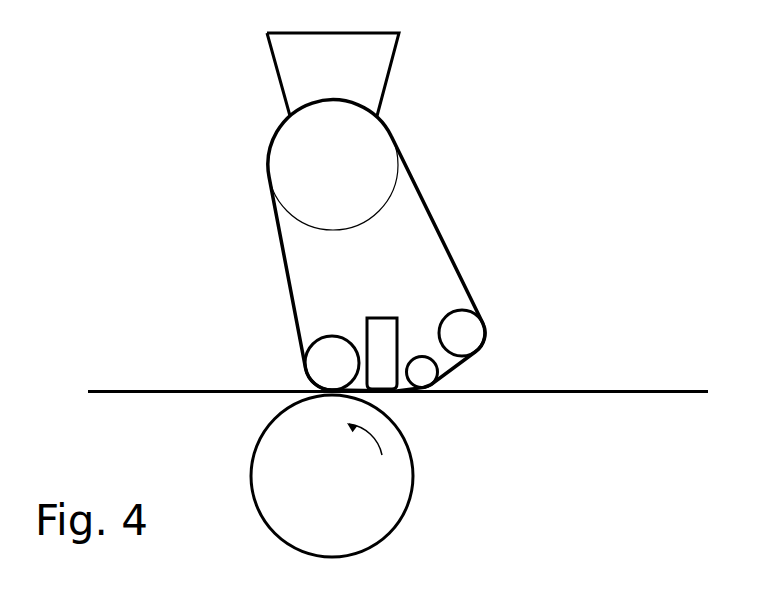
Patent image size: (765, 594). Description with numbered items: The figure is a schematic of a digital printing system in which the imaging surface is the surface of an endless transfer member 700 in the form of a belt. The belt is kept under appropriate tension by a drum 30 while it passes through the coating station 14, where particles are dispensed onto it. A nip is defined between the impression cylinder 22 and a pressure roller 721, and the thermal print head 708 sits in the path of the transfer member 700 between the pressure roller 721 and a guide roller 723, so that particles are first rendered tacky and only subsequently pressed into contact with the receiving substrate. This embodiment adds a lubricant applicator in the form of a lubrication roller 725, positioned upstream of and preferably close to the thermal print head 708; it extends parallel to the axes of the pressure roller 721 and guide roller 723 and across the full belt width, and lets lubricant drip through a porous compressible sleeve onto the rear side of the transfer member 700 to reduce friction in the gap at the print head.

The coating station 14 is at (351, 82).
The drum 30 is at (355, 158).
The transfer member 700 is at (450, 240).
The pressure roller 721 is at (327, 368).
The thermal print head 708 is at (388, 332).
The lubrication roller 725 is at (423, 372).
The guide roller 723 is at (472, 337).
The impression cylinder 22 is at (378, 502).